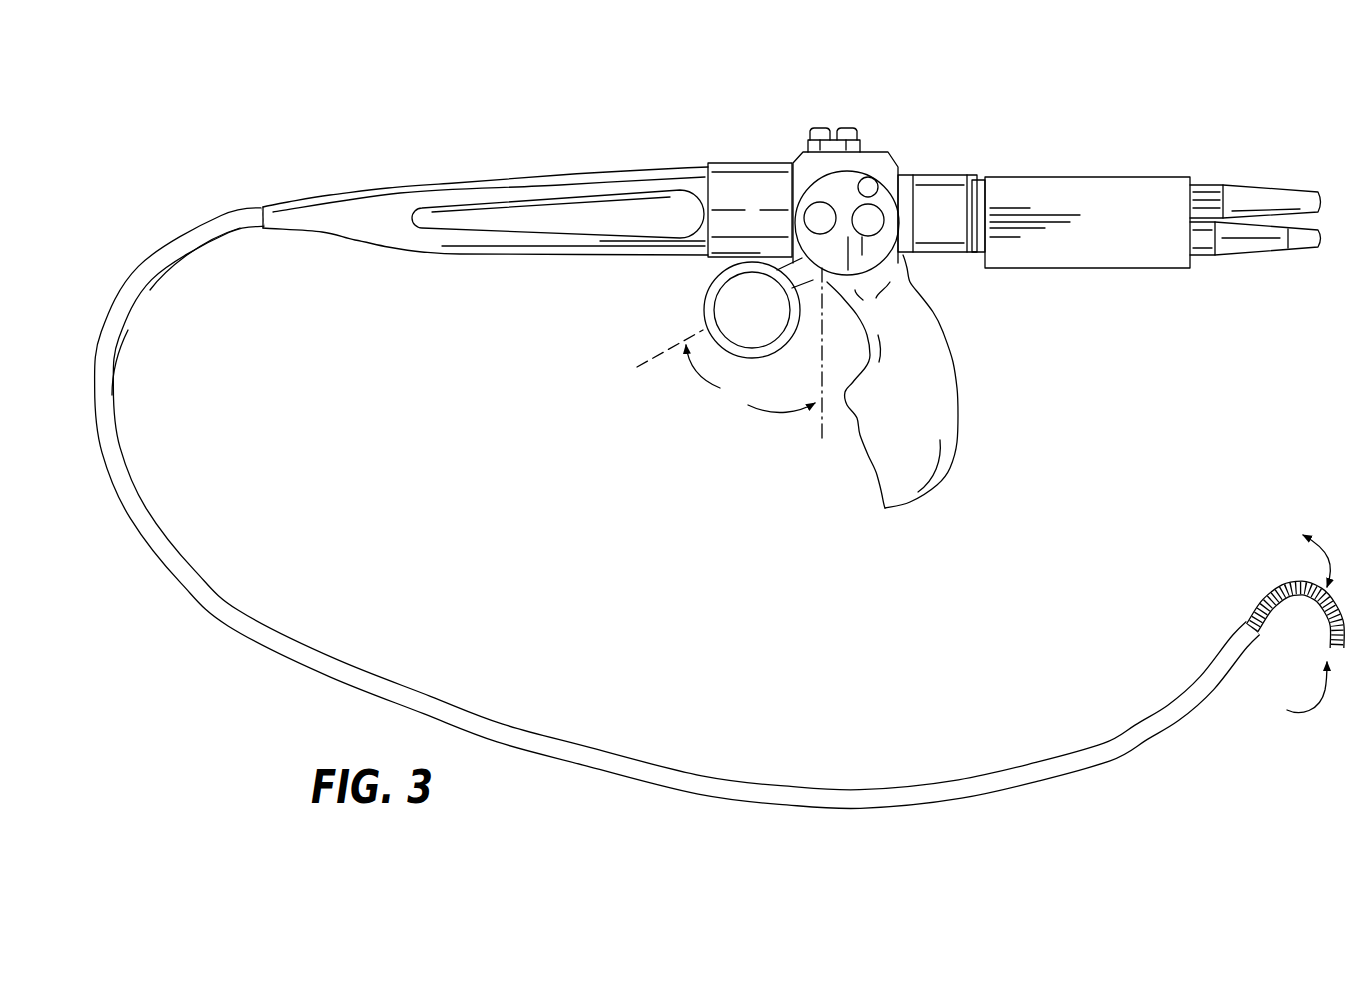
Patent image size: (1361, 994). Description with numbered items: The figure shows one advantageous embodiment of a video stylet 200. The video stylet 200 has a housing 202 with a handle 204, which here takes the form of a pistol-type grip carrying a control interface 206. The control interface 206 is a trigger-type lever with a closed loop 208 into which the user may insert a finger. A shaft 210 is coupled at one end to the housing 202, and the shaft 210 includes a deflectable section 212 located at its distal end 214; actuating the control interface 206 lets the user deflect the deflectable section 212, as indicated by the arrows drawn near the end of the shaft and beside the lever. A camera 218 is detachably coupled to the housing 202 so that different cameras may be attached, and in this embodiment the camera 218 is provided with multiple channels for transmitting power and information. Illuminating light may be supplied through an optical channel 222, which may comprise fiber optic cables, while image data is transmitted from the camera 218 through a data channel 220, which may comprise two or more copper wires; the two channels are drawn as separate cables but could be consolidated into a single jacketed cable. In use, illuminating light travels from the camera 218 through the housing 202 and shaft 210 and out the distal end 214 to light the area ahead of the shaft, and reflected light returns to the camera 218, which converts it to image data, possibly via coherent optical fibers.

The video stylet 200 is at (754, 142).
The housing 202 is at (467, 180).
The handle 204 is at (940, 417).
The control interface 206 is at (690, 302).
The closed loop 208 is at (747, 357).
The shaft 210 is at (193, 572).
The deflectable section 212 is at (1270, 597).
The distal end 214 is at (1297, 687).
The camera 218 is at (1057, 177).
The data channel 220 is at (1275, 185).
The optical channel 222 is at (1267, 243).